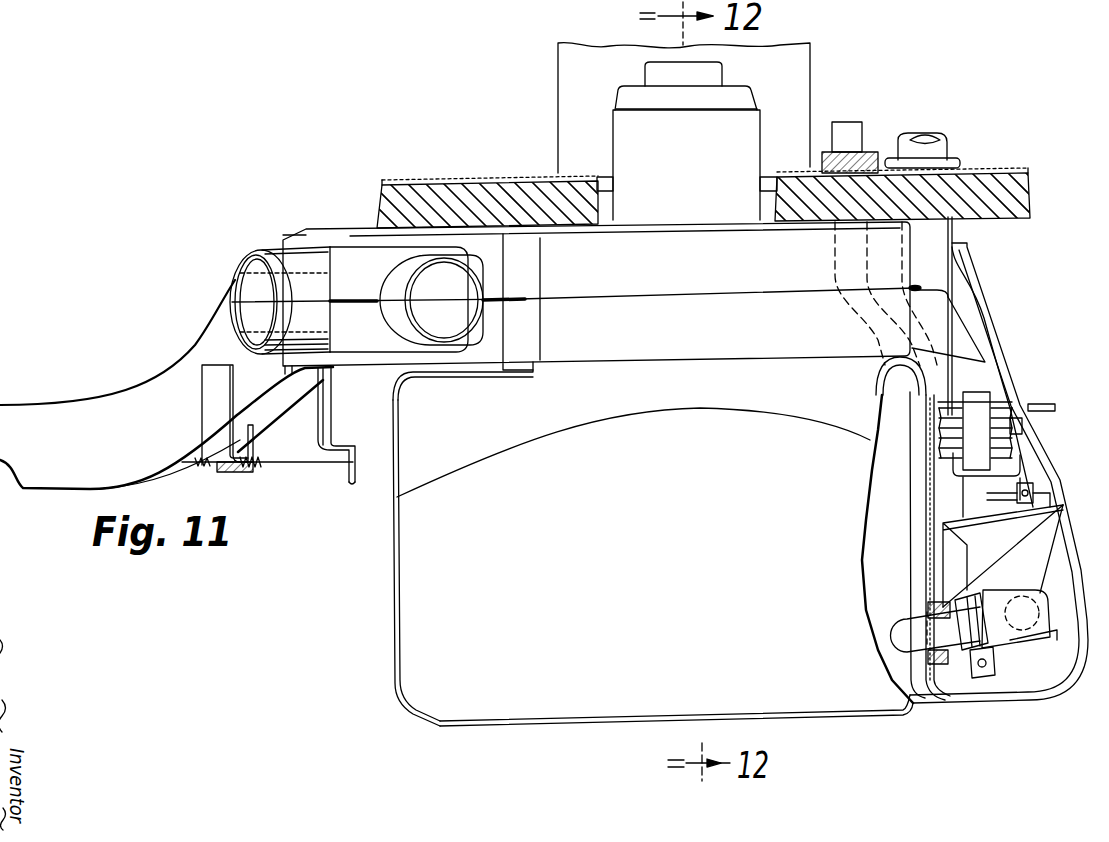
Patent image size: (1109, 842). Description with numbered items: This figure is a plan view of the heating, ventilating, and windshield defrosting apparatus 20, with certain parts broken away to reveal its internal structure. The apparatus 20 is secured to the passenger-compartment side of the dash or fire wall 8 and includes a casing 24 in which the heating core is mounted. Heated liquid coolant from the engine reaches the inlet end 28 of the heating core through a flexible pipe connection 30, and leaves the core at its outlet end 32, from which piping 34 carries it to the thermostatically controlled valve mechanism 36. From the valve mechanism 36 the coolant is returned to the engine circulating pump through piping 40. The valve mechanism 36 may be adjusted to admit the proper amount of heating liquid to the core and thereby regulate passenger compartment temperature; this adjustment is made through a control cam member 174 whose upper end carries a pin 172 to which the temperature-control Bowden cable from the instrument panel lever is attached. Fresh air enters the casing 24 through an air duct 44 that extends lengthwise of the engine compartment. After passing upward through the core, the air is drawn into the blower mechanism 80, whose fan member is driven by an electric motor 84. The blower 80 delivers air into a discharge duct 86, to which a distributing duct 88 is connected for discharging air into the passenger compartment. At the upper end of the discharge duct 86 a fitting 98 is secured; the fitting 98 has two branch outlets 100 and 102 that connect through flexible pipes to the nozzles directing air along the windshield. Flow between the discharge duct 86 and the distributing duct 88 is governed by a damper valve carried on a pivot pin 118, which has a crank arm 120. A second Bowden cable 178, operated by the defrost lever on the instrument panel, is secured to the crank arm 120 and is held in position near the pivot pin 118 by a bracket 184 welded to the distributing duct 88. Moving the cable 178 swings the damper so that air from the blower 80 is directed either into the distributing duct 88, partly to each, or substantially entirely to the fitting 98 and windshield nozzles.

The fire wall 8 is at (380, 199).
The heating, ventilating, and windshield defrosting apparatus 20 is at (415, 727).
The casing 24 is at (630, 713).
The inlet end 28 is at (880, 387).
The flexible pipe connection 30 is at (840, 127).
The outlet end 32 is at (903, 668).
The piping 34 is at (1043, 587).
The thermostatically controlled valve mechanism 36 is at (1050, 437).
The piping 40 is at (937, 222).
The air duct 44 is at (798, 50).
The blower mechanism 80 is at (636, 365).
The electric motor 84 is at (617, 143).
The discharge duct 86 is at (540, 258).
The distributing duct 88 is at (40, 415).
The fitting 98 is at (353, 348).
The branch outlet 100 is at (283, 255).
The branch outlet 102 is at (473, 313).
The pivot pin 118 is at (320, 402).
The crank arm 120 is at (357, 477).
The pin 172 is at (1036, 405).
The control cam member 174 is at (1033, 490).
The Bowden cable 178 is at (313, 463).
The bracket 184 is at (218, 432).